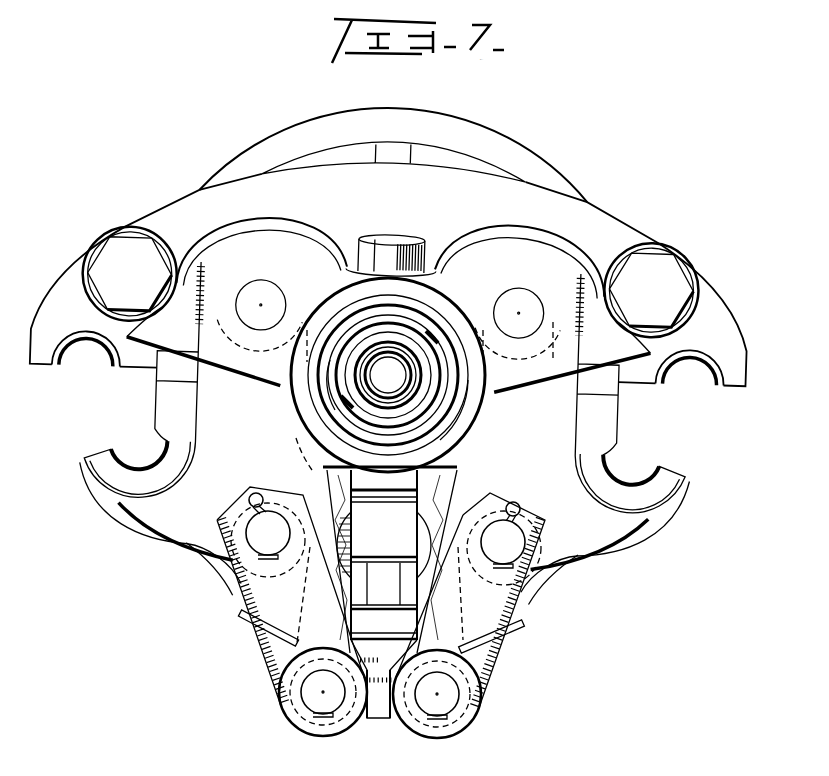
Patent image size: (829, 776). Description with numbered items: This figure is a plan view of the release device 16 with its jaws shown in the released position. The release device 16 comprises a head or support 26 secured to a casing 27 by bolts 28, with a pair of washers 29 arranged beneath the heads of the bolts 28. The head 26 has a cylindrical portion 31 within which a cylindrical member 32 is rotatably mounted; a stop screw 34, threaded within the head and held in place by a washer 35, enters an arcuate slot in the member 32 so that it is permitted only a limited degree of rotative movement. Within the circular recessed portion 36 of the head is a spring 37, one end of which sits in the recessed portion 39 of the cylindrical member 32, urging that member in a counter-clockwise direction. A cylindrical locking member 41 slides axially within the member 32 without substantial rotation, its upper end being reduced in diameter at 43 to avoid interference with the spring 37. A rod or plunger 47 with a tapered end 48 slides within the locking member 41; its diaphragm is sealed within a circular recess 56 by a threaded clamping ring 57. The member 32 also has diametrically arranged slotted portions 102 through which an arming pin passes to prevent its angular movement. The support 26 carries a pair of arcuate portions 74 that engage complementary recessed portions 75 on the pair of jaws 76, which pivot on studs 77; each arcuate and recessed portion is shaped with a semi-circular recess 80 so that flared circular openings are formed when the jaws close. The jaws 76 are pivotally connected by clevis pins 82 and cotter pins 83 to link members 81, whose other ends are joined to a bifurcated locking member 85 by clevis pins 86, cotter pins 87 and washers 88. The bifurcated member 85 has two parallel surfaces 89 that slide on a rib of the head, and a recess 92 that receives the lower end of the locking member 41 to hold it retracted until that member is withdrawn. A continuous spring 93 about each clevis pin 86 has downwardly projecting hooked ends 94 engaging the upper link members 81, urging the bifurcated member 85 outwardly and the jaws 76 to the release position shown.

The release device 16 is at (271, 133).
The head or support 26 is at (389, 300).
The casing 27 is at (563, 177).
The bolts 28 is at (118, 246).
The washers 29 is at (136, 229).
The cylindrical portion 31 is at (462, 408).
The cylindrical member 32 is at (403, 320).
The stop screw 34 is at (398, 245).
The washer 35 is at (370, 245).
The circular recessed portion 36 is at (357, 382).
The spring 37 is at (313, 367).
The recessed portion 39 is at (367, 327).
The cylindrical locking member 41 is at (330, 393).
The reduced diameter portion 43 is at (343, 403).
The rod or plunger 47 is at (388, 375).
The tapered end 48 is at (385, 405).
The circular recess 56 is at (477, 141).
The clamping ring 57 is at (368, 152).
The arcuate portions 74 is at (85, 342).
The recessed portions 75 is at (133, 460).
The jaws 76 is at (383, 535).
The studs 77 is at (261, 314).
The semi-circular recess 80 is at (118, 350).
The link members 81 is at (277, 657).
The clevis pins 82 is at (386, 544).
The cotter pins 83 is at (253, 494).
The bifurcated locking member 85 is at (357, 513).
The clevis pins 86 is at (317, 692).
The cotter pins 87 is at (293, 673).
The washers 88 is at (300, 718).
The parallel surfaces 89 is at (411, 620).
The recess 92 is at (418, 544).
The continuous spring 93 is at (370, 717).
The hooked ends 94 is at (238, 614).
The slotted portions 102 is at (440, 345).